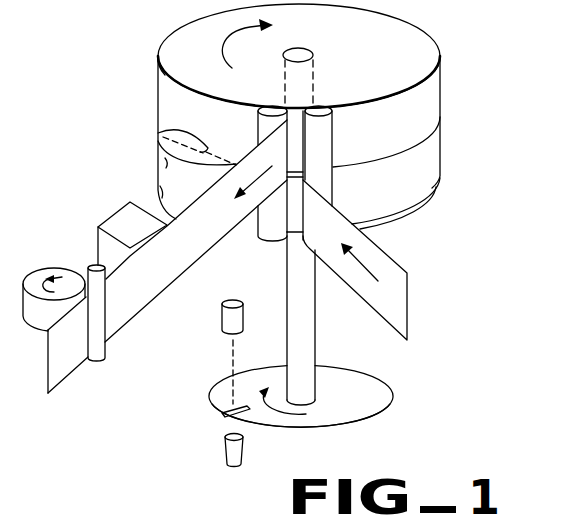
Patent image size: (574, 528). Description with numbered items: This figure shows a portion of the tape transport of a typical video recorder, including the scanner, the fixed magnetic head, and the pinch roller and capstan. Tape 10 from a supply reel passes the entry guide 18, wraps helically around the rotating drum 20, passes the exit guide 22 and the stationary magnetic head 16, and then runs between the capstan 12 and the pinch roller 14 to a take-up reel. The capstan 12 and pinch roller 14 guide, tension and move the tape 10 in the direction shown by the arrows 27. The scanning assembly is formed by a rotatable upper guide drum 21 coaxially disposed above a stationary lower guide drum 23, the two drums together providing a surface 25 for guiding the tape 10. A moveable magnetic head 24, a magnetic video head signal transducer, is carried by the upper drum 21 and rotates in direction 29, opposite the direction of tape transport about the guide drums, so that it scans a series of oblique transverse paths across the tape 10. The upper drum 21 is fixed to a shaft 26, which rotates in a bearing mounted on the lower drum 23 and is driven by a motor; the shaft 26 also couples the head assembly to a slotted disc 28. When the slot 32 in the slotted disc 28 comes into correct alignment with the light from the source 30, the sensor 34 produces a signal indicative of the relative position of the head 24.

The tape 10 is at (175, 277).
The capstan 12 is at (106, 357).
The pinch roller 14 is at (35, 275).
The stationary magnetic head 16 is at (113, 222).
The entry guide 18 is at (318, 108).
The rotating drum 20 is at (422, 38).
The rotatable upper guide drum 21 is at (172, 84).
The exit guide 22 is at (268, 108).
The stationary lower guide drum 23 is at (167, 163).
The moveable magnetic head 24 is at (157, 125).
The surface 25 is at (165, 195).
The shaft 26 is at (310, 332).
The arrows 27 is at (258, 178).
The slotted disc 28 is at (384, 393).
The direction 29 is at (264, 43).
The source 30 is at (228, 318).
The slot 32 is at (222, 416).
The sensor 34 is at (225, 453).